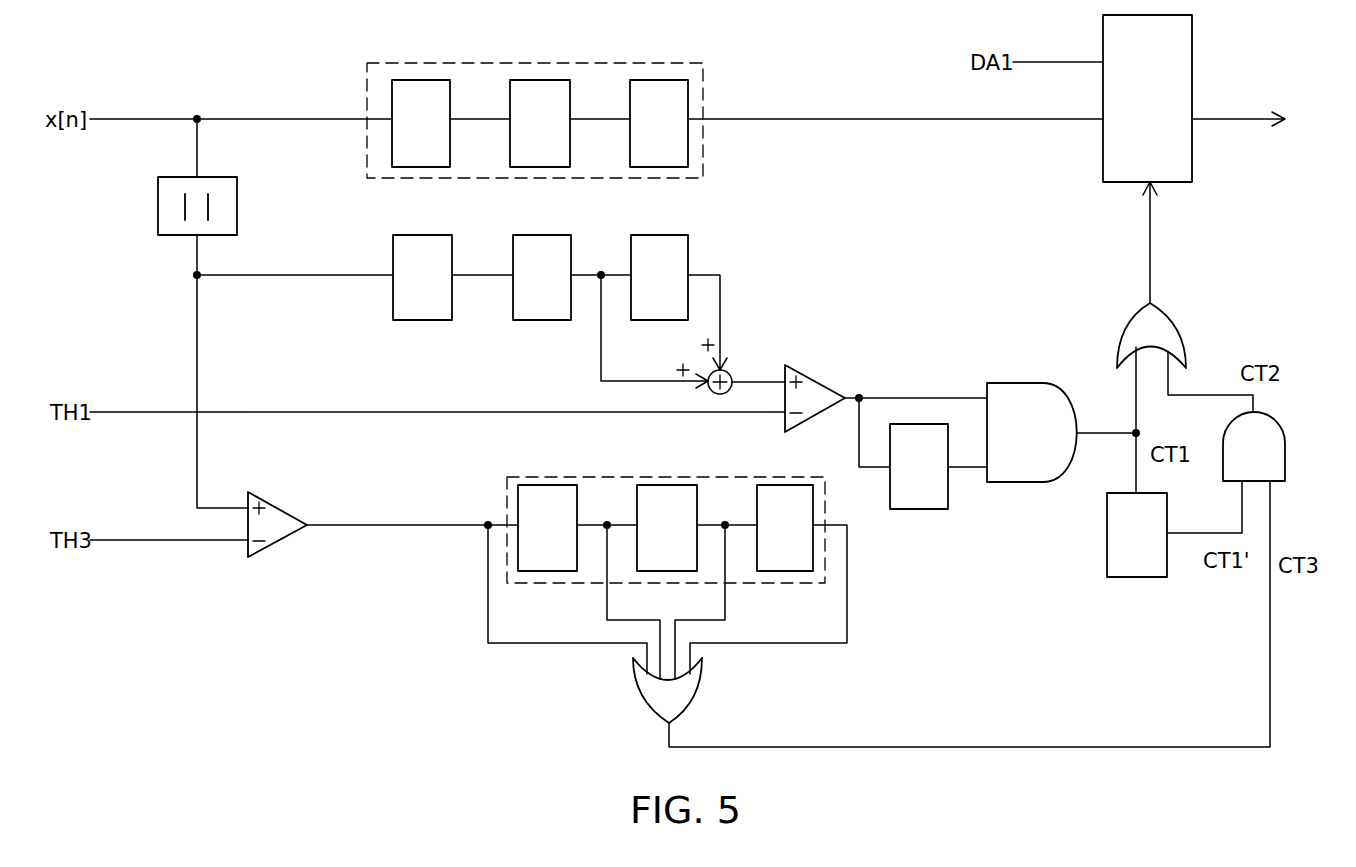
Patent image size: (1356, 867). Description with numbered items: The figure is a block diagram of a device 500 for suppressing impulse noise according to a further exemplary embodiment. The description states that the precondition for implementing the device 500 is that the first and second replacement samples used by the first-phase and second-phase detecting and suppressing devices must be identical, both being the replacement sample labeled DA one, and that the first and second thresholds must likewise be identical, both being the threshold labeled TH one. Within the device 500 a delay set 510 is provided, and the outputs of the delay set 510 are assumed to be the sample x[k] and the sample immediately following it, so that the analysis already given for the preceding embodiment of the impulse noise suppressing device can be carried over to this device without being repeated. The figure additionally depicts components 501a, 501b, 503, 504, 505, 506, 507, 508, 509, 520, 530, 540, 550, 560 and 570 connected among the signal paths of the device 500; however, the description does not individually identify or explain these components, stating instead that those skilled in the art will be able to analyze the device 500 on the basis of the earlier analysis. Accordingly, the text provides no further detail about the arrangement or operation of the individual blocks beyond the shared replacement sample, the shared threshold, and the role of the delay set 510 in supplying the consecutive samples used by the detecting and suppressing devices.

The device for suppressing impulse noise 500 is at (1291, 793).
The delay unit 501a is at (452, 250).
The delay unit 501b is at (571, 250).
The delay unit 503 is at (688, 250).
The adder 504 is at (730, 372).
The comparator 505 is at (822, 380).
The delay unit 506 is at (918, 509).
The AND gate 507 is at (1020, 383).
The delay unit 508 is at (1135, 577).
The OR gate 509 is at (1175, 322).
The delay set 510 is at (705, 90).
The delay chain 520 is at (507, 503).
The comparator 530 is at (277, 542).
The absolute value unit 540 is at (237, 203).
The OR gate 550 is at (700, 690).
The AND gate 560 is at (1285, 452).
The multiplexer 570 is at (1192, 55).